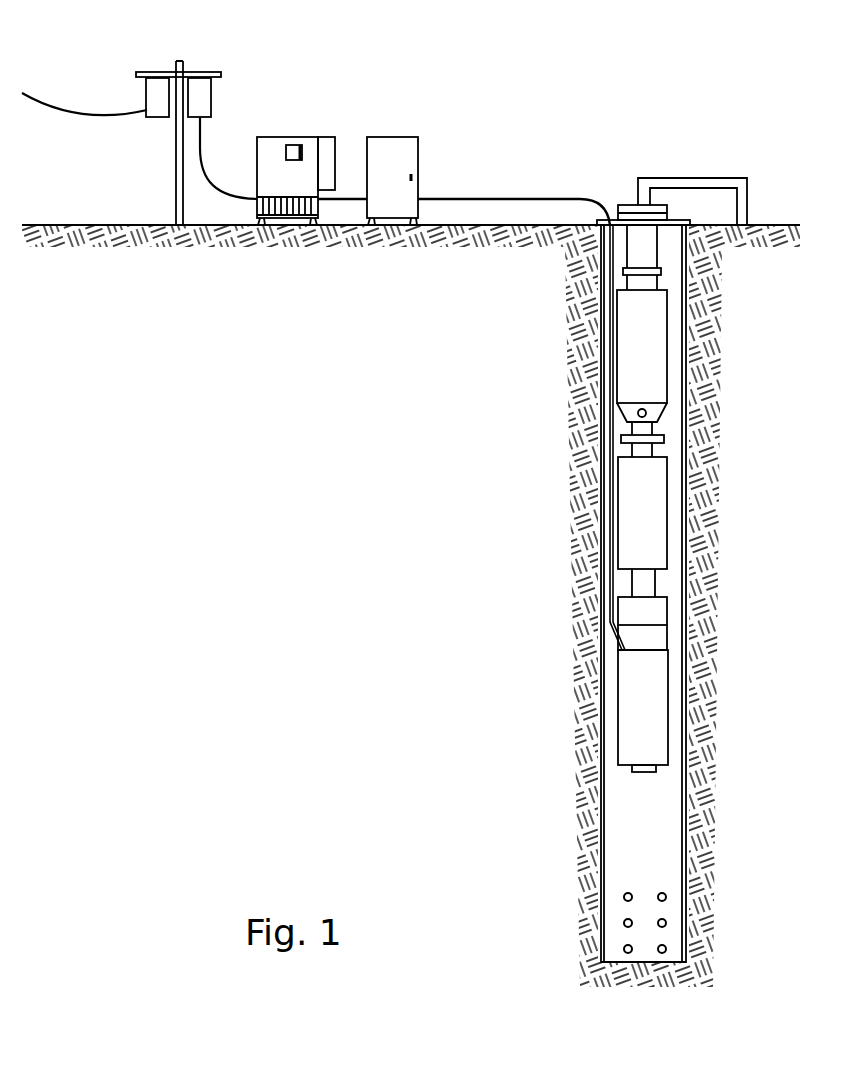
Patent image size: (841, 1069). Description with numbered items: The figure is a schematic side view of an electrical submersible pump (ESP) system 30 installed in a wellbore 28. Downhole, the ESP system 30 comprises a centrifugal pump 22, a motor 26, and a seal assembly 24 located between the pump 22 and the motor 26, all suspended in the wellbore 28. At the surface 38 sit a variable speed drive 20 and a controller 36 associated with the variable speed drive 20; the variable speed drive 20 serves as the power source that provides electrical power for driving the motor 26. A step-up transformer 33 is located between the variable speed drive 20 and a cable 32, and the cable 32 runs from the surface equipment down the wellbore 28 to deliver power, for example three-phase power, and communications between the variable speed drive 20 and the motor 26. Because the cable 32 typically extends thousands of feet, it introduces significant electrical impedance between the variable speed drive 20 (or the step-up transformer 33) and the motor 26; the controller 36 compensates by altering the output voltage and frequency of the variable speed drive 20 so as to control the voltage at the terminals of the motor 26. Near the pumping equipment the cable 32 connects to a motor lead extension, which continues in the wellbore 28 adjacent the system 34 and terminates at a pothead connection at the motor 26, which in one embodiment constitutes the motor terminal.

The variable speed drive 20 is at (283, 137).
The centrifugal pump 22 is at (646, 321).
The seal assembly 24 is at (636, 508).
The motor 26 is at (636, 700).
The wellbore 28 is at (631, 884).
The electrical submersible pump system 30 is at (411, 496).
The cable 32 is at (470, 198).
The step-up transformer 33 is at (403, 137).
The system 34 is at (676, 275).
The controller 36 is at (327, 137).
The surface 38 is at (710, 224).